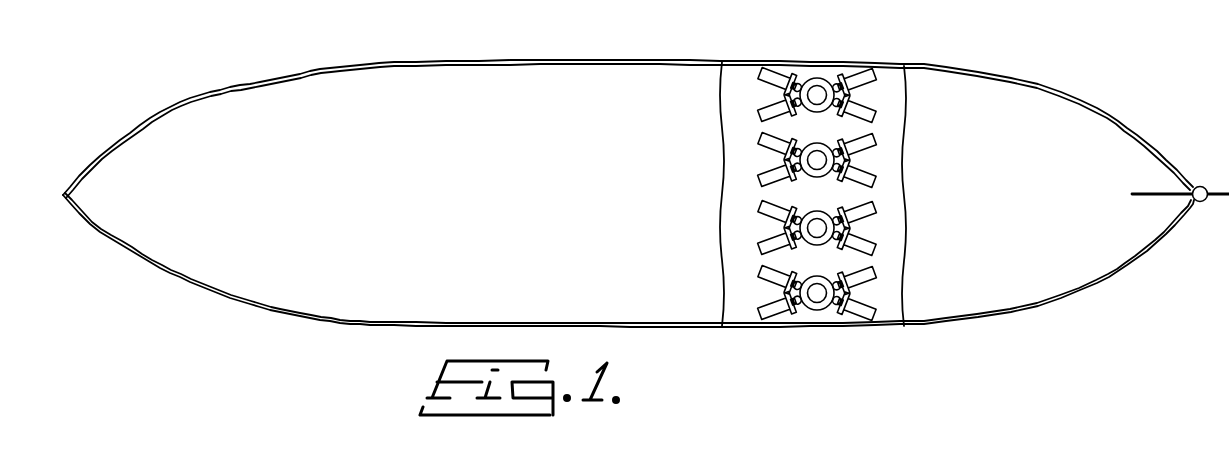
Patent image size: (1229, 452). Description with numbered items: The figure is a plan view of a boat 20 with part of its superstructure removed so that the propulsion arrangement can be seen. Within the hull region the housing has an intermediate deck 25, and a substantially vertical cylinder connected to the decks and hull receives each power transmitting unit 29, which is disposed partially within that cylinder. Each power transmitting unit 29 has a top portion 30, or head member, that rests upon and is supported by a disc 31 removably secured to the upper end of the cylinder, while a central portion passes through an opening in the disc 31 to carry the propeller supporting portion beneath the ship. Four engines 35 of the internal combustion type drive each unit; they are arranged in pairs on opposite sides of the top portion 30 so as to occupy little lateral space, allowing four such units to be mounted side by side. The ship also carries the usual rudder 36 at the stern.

The boat 20 is at (1000, 285).
The intermediate deck 25 is at (889, 88).
The power transmitting unit 29 is at (853, 215).
The top portion 30 is at (817, 297).
The disc 31 is at (826, 219).
The engines 35 is at (866, 316).
The rudder 36 is at (1220, 198).